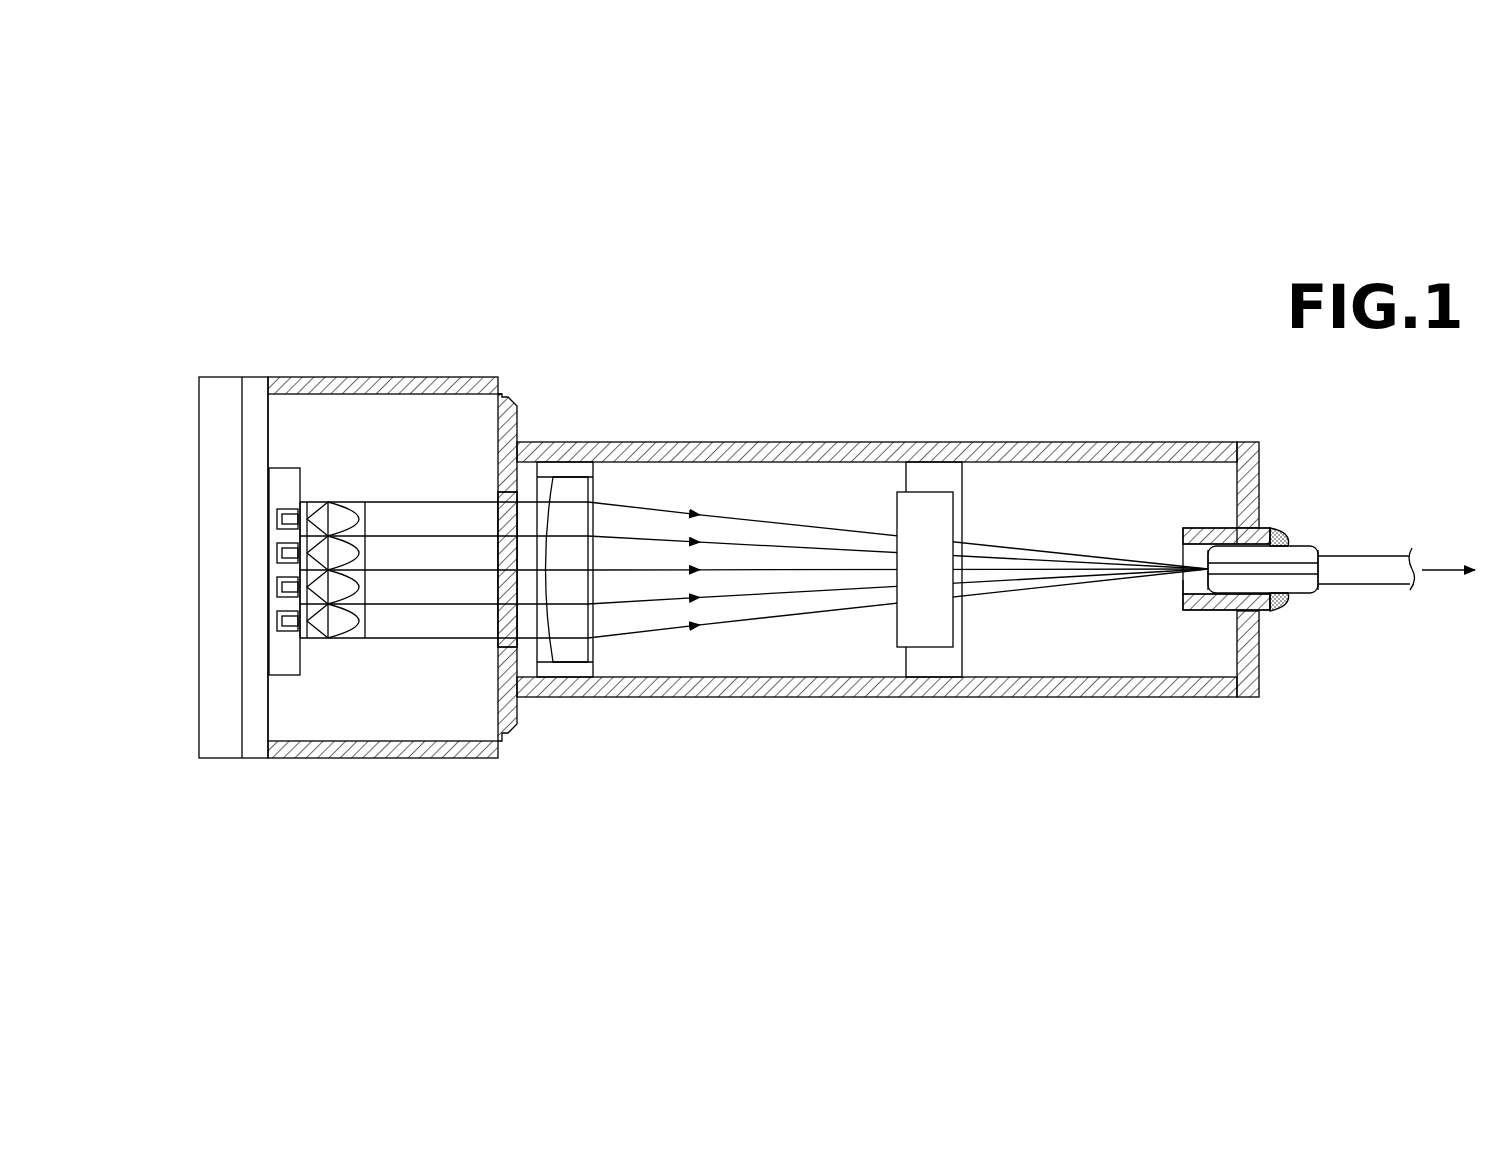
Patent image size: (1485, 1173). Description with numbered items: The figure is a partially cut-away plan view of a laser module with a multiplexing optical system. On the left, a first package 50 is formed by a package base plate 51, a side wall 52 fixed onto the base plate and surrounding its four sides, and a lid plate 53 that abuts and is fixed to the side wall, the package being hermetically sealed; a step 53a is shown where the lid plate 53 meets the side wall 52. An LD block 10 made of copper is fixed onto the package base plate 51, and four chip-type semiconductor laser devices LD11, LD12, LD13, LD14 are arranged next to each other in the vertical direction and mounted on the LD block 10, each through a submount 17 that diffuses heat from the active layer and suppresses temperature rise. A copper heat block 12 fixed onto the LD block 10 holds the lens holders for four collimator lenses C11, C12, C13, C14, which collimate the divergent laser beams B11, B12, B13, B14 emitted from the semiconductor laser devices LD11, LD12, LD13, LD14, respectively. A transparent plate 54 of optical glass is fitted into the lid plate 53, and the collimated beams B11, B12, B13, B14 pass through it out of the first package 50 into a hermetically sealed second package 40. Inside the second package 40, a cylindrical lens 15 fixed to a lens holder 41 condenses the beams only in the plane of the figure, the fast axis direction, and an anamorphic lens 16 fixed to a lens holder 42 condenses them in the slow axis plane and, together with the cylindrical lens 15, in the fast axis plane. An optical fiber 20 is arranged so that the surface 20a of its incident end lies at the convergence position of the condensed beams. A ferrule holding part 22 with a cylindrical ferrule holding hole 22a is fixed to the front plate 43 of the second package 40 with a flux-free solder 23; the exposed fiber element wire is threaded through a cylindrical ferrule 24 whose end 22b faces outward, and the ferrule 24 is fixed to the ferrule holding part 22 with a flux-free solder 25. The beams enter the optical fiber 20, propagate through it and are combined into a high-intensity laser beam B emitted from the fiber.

The first package 50 is at (494, 327).
The package base plate 51 is at (258, 376).
The side wall 52 is at (428, 378).
The lid plate 53 is at (516, 432).
The step portion of flange 53a is at (505, 388).
The transparent plate 54 is at (502, 545).
The LD block 10 is at (280, 472).
The heat block 12 is at (318, 505).
The submount 17 is at (275, 515).
The semiconductor laser device LD11 is at (277, 519).
The semiconductor laser device LD12 is at (277, 553).
The semiconductor laser device LD13 is at (277, 587).
The semiconductor laser device LD14 is at (277, 621).
The collimator lens C11 is at (346, 510).
The collimator lens C12 is at (352, 548).
The collimator lens C13 is at (352, 592).
The collimator lens C14 is at (346, 630).
The laser beam B11 is at (725, 522).
The laser beam B12 is at (735, 553).
The laser beam B13 is at (735, 582).
The laser beam B14 is at (725, 612).
The cylindrical lens 15 is at (585, 513).
The lens holder 41 is at (590, 668).
The anamorphic lens 16 is at (945, 519).
The lens holder 42 is at (955, 660).
The second package 40 is at (1200, 422).
The front plate 43 is at (1260, 650).
The optical fiber 20 is at (1392, 546).
The surface of incident end 20a is at (1207, 568).
The ferrule holding part 22 is at (1221, 615).
The ferrule holding hole 22a is at (1186, 592).
The ferrule end 22b is at (1300, 576).
The flux-free solder 23 is at (1246, 528).
The ferrule 24 is at (1300, 546).
The flux-free solder 25 is at (1280, 530).
The high-intensity laser beam B is at (1440, 575).